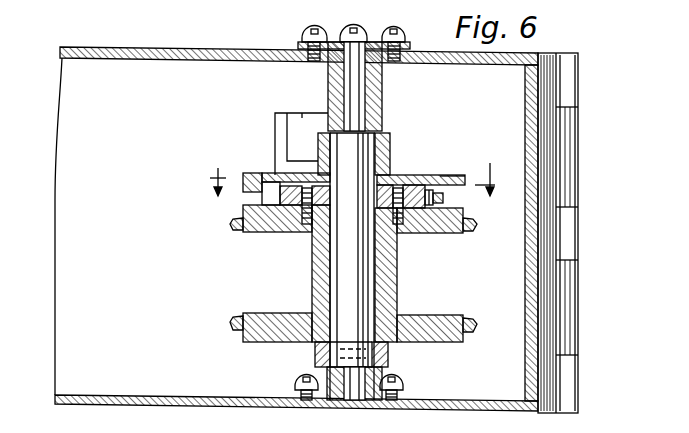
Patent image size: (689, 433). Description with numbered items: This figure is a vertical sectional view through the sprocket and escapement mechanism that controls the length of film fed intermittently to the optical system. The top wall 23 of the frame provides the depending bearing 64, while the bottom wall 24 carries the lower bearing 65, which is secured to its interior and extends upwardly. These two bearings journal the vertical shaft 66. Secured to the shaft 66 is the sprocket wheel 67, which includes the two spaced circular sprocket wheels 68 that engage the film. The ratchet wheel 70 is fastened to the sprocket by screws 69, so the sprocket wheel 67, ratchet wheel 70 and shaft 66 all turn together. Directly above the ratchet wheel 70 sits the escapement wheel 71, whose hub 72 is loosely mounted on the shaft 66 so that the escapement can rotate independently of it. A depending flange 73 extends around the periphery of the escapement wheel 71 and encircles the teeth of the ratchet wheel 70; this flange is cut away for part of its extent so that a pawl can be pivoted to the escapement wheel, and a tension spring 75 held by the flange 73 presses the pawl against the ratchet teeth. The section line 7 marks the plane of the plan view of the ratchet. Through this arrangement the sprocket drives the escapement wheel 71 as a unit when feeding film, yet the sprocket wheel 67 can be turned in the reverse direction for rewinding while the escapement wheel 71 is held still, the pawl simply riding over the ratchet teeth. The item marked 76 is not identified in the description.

The section line 7- 7 is at (354, 182).
The top wall 23 is at (125, 47).
The bottom wall 24 is at (140, 395).
The depending bearing 64 is at (382, 98).
The lower bearing 65 is at (382, 375).
The shaft 66 is at (343, 288).
The sprocket wheel 67 is at (400, 283).
The spaced circular sprocket wheels 68 is at (250, 235).
The screws 69 is at (282, 230).
The ratchet wheel 70 is at (420, 186).
The escapement wheel 71 is at (452, 176).
The hub 72 is at (318, 142).
The depending flange 73 is at (250, 172).
The tension spring 75 is at (443, 197).
The bracket arm 76 is at (302, 118).